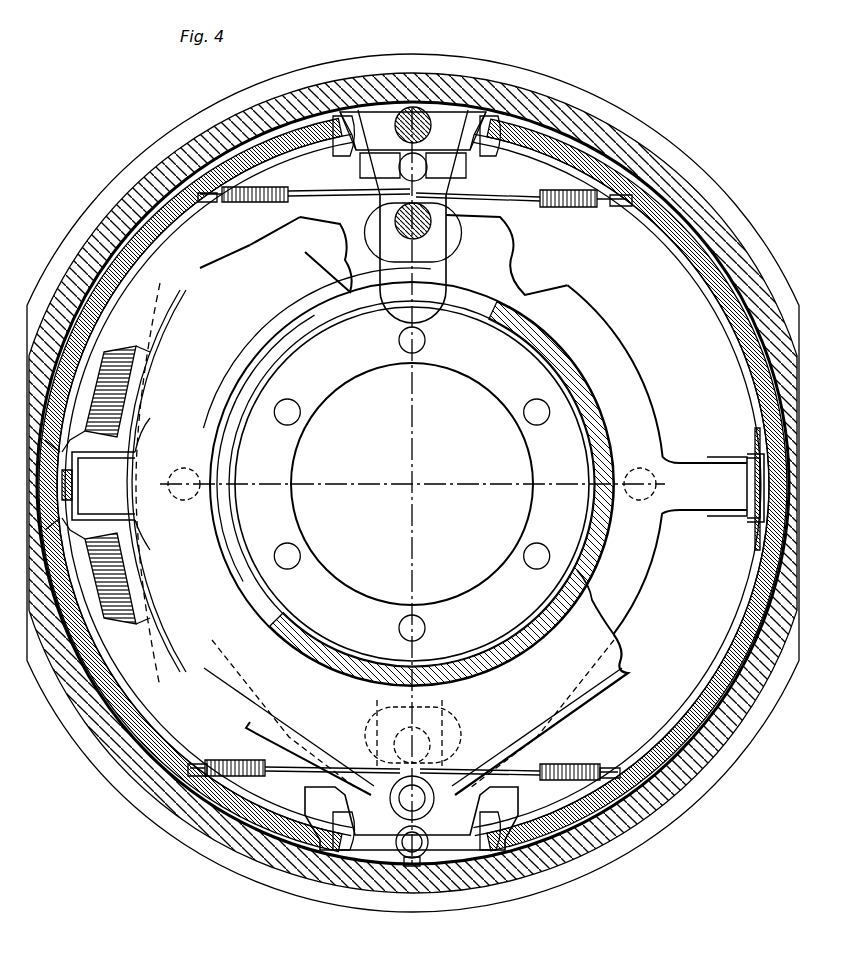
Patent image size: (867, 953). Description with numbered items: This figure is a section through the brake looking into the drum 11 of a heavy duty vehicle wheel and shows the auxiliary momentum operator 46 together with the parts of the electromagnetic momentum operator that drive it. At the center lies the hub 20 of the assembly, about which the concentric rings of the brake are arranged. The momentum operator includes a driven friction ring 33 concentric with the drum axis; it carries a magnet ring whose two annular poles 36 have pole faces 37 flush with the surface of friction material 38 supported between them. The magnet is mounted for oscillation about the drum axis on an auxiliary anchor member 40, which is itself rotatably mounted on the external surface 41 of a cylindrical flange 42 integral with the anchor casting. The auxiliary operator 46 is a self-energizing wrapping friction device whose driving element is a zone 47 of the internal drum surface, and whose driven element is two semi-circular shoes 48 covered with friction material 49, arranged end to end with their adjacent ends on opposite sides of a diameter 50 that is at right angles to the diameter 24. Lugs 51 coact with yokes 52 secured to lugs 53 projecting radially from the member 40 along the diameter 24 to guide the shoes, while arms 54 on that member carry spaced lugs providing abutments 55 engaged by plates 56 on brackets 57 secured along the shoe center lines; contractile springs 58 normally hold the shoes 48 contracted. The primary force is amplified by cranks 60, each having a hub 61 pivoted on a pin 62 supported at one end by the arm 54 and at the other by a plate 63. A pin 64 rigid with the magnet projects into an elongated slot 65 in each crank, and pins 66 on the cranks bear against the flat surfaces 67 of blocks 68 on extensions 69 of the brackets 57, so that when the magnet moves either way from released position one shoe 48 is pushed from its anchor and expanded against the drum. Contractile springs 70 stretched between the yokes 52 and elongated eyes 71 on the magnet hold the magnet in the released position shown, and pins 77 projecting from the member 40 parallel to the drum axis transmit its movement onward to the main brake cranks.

The drum 11 is at (205, 140).
The hub 20 is at (333, 370).
The diameter 24 is at (345, 483).
The driven friction ring 33 is at (624, 688).
The annular poles 36 is at (630, 672).
The pole faces 37 is at (590, 600).
The friction material 38 is at (617, 640).
The auxiliary anchor member 40 is at (625, 357).
The external surface 41 is at (560, 362).
The cylindrical flange 42 is at (548, 352).
The auxiliary momentum operator 46 is at (320, 175).
The zone 47 is at (150, 262).
The semi-circular shoes 48 is at (148, 233).
The friction material 49 is at (168, 210).
The diameter 50 is at (414, 403).
The lugs 51 is at (80, 422).
The yokes 52 is at (92, 452).
The lugs 53 is at (150, 420).
The arms 54 is at (360, 120).
The abutments 55 is at (414, 483).
The plates 56 is at (345, 118).
The brackets 57 is at (295, 197).
The contractile springs 58 is at (255, 200).
The cranks 60 is at (440, 218).
The hub 61 is at (440, 122).
The pin 62 is at (418, 115).
The plate 63 is at (455, 855).
The pin 64 is at (432, 226).
The elongated slot 65 is at (432, 245).
The pins 66 is at (434, 790).
The flat surfaces 67 is at (452, 178).
The blocks 68 is at (412, 166).
The extensions 69 is at (365, 190).
The contractile springs 70 is at (120, 352).
The elongated eyes 71 is at (178, 306).
The pins 77 is at (184, 500).